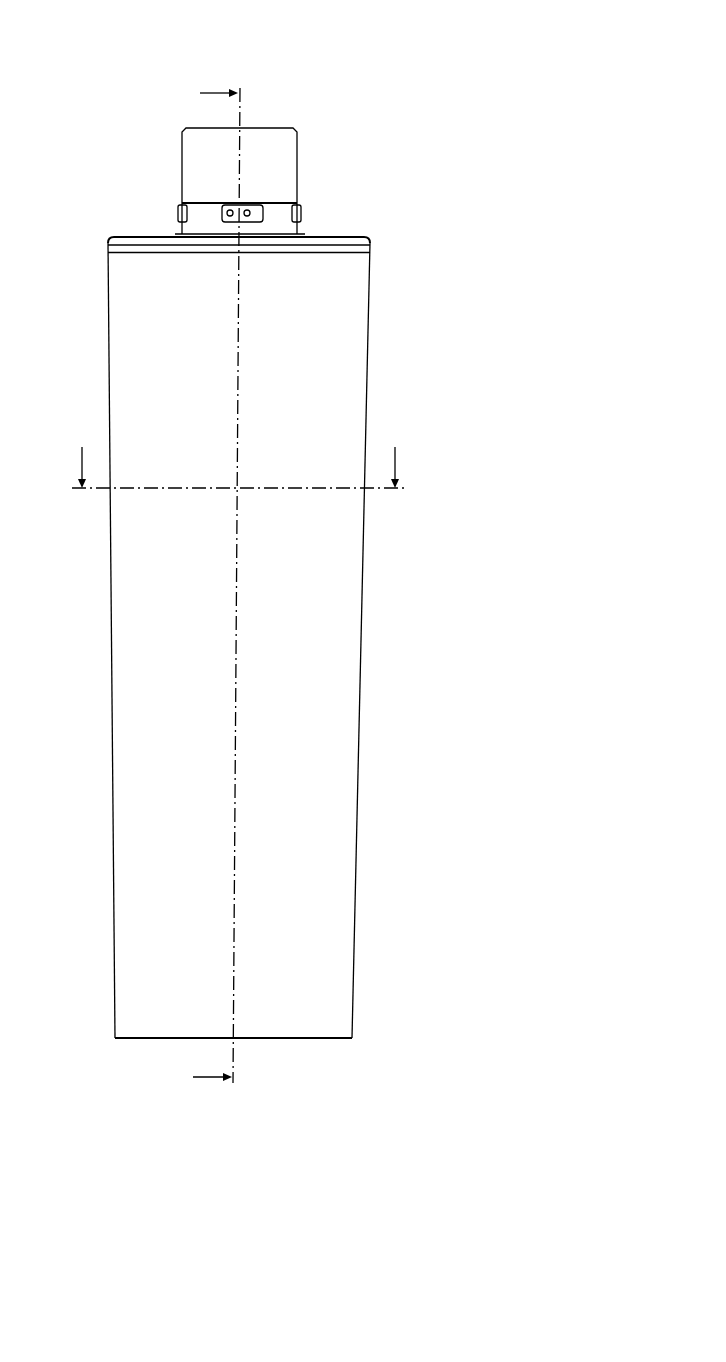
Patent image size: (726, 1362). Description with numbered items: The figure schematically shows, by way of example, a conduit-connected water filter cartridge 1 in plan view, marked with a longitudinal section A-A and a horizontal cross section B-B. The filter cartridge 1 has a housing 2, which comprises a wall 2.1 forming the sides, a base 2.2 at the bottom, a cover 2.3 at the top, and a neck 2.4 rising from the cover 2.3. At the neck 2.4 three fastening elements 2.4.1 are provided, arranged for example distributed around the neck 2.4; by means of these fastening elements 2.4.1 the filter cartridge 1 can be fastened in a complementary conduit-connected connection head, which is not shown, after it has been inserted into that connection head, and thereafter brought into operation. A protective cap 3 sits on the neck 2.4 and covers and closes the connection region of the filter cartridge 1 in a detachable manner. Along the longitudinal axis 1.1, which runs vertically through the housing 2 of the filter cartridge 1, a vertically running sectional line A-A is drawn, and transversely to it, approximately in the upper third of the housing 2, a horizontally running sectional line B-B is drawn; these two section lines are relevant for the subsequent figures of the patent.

The water filter cartridge 1 is at (271, 78).
The longitudinal axis 1.1 is at (237, 642).
The housing 2 is at (394, 393).
The wall 2.1 is at (368, 311).
The base 2.2 is at (303, 1040).
The cover 2.3 is at (350, 248).
The neck 2.4 is at (342, 158).
The fastening element 2.4.1 is at (234, 204).
The protective cap 3 is at (298, 143).